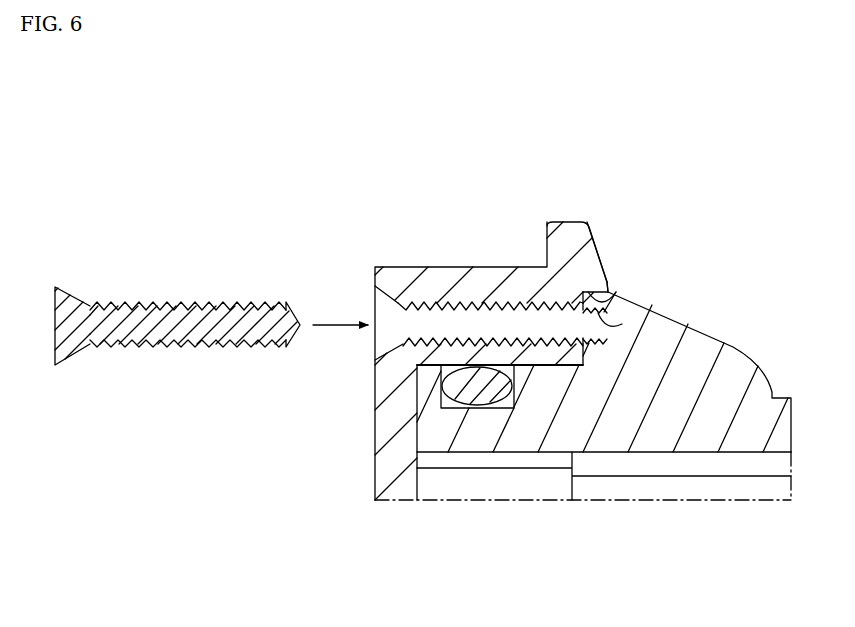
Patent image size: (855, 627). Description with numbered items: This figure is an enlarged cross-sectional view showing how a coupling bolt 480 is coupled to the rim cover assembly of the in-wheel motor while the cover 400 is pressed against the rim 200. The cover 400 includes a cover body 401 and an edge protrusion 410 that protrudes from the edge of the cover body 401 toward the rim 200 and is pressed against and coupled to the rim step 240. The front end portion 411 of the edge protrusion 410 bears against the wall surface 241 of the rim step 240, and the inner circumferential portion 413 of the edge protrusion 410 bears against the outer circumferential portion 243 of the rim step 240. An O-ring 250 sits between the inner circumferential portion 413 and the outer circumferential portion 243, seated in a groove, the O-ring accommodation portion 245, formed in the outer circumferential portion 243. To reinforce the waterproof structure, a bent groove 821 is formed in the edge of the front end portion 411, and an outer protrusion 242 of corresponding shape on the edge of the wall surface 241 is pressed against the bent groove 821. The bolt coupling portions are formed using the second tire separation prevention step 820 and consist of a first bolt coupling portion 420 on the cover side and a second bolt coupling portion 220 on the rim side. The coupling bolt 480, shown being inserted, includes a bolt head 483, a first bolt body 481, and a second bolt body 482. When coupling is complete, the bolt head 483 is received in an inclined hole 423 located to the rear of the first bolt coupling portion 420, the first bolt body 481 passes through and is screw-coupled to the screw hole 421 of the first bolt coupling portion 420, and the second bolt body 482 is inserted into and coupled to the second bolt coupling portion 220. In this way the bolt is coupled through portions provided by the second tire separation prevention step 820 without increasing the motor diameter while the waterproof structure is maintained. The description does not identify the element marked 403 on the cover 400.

The rim 200 is at (588, 365).
The second bolt coupling portion 220 is at (625, 316).
The rim step 240 is at (670, 453).
The wall surface 241 is at (585, 345).
The outer protrusion 242 is at (620, 303).
The outer circumferential portion 243 is at (603, 313).
The O-ring accommodation portion 245 is at (503, 405).
The O-ring 250 is at (470, 388).
The cover 400 is at (469, 347).
The cover body 401 is at (375, 474).
The contact surface 403 is at (418, 458).
The edge protrusion 410 is at (492, 248).
The front end portion 411 is at (580, 364).
The inner circumferential portion 413 is at (525, 363).
The first bolt coupling portion 420 is at (439, 239).
The screw hole 421 is at (403, 302).
The inclined hole 423 is at (377, 292).
The coupling bolt 480 is at (167, 337).
The first bolt body 481 is at (163, 338).
The second bolt body 482 is at (277, 341).
The bolt head 483 is at (60, 366).
The second tire separation prevention step 820 is at (566, 233).
The bent groove 821 is at (628, 298).